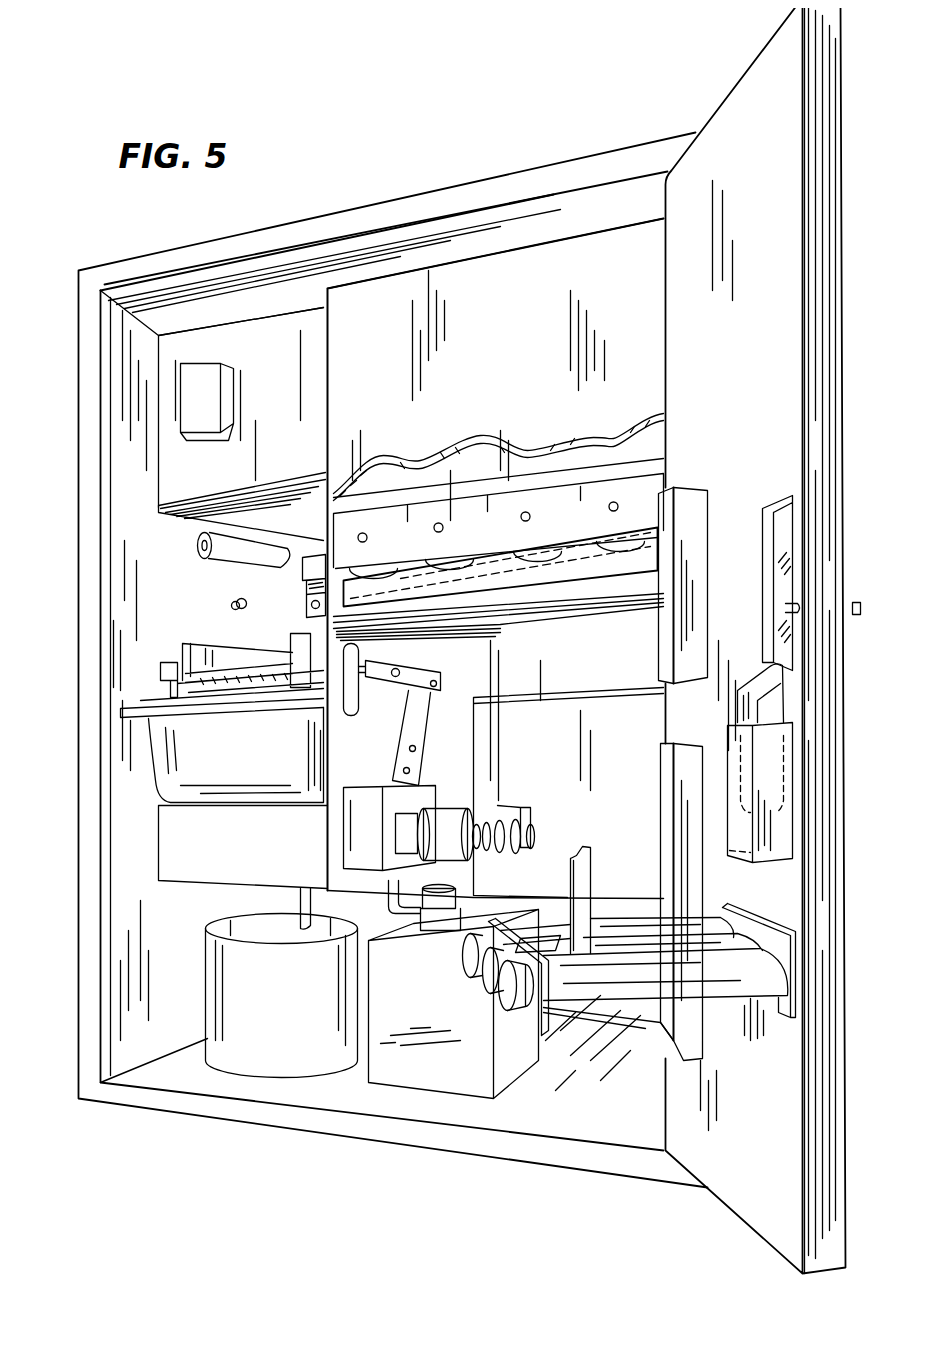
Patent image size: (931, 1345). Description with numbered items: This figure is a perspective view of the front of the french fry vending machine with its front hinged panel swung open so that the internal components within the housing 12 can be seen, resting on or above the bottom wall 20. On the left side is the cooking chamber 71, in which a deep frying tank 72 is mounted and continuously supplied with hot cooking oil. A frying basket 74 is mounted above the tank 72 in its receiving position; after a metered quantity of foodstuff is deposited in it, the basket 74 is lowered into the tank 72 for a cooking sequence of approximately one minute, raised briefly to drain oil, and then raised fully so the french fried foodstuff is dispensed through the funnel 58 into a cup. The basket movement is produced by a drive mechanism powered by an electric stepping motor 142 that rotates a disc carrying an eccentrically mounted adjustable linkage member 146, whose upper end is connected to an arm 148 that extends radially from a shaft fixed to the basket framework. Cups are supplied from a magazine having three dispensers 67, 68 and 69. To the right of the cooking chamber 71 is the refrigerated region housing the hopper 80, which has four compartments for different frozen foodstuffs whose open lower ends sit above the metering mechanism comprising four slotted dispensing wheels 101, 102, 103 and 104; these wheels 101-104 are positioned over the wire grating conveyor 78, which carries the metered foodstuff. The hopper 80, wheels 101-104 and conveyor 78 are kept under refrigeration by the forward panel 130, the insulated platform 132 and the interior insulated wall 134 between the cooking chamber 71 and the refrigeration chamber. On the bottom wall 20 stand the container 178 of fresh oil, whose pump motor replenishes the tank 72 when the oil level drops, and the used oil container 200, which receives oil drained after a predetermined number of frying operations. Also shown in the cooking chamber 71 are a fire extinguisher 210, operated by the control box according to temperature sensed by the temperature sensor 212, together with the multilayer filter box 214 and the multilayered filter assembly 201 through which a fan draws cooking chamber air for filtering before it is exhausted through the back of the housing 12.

The housing 12 is at (125, 875).
The bottom wall 20 is at (562, 1105).
The funnel 58 is at (745, 675).
The dispenser 67 is at (465, 958).
The dispenser 68 is at (480, 978).
The dispenser 69 is at (495, 1005).
The cooking chamber 71 is at (156, 528).
The deep frying tank 72 is at (160, 765).
The frying basket 74 is at (232, 650).
The conveyor 78 is at (660, 553).
The hopper 80 is at (465, 252).
The metered foodstuff dispensing wheel 101 is at (372, 540).
The metered foodstuff dispensing wheel 102 is at (448, 527).
The metered foodstuff dispensing wheel 103 is at (530, 550).
The metered foodstuff dispensing wheel 104 is at (612, 538).
The forward panel 130 is at (387, 347).
The insulated platform 132 is at (582, 598).
The interior insulated wall 134 is at (355, 470).
The electric stepping motor 142 is at (445, 810).
The adjustable linkage member 146 is at (398, 746).
The arm 148 is at (410, 680).
The container of fresh oil 178 is at (422, 1070).
The used oil container 200 is at (245, 1040).
The filter assembly 201 is at (160, 345).
The fire extinguisher 210 is at (222, 552).
The temperature sensor 212 is at (232, 602).
The multilayer filter box 214 is at (303, 356).